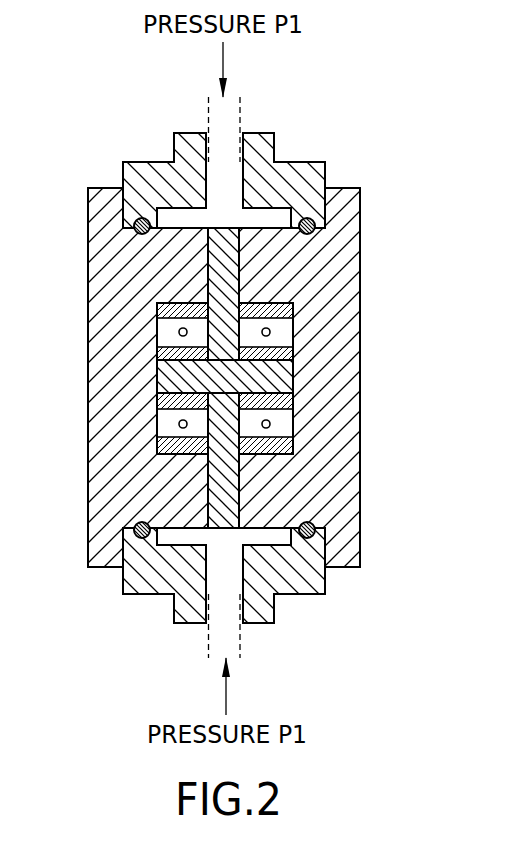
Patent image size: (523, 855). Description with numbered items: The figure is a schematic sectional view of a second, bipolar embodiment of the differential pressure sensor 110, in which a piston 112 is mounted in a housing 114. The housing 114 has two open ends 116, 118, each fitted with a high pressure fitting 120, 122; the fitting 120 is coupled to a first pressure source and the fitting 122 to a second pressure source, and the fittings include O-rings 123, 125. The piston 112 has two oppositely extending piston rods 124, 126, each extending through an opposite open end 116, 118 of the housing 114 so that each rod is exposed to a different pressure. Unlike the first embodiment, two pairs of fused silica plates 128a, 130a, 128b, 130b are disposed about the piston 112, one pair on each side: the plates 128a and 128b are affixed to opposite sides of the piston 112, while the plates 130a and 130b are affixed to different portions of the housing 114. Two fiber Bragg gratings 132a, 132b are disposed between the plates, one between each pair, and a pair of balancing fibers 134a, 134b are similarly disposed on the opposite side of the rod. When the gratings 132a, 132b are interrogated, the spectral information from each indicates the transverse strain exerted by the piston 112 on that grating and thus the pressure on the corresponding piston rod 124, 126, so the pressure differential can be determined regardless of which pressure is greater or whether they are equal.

The differential pressure sensor 110 is at (142, 617).
The piston 112 is at (293, 377).
The housing 114 is at (345, 262).
The open end 116 is at (350, 143).
The open end 118 is at (357, 584).
The high pressure fitting 120 is at (134, 167).
The high pressure fitting 122 is at (280, 588).
The O-ring 123 is at (315, 525).
The piston rod 124 is at (213, 256).
The O-ring 125 is at (315, 221).
The piston rod 126 is at (240, 497).
The fused silica plate 128a is at (157, 399).
The fused silica plate 128b is at (157, 362).
The fused silica plate 130a is at (157, 447).
The fused silica plate 130b is at (157, 305).
The fiber Bragg grating 132a is at (270, 423).
The fiber Bragg grating 132b is at (270, 331).
The balancing fiber 134a is at (179, 425).
The balancing fiber 134b is at (179, 332).